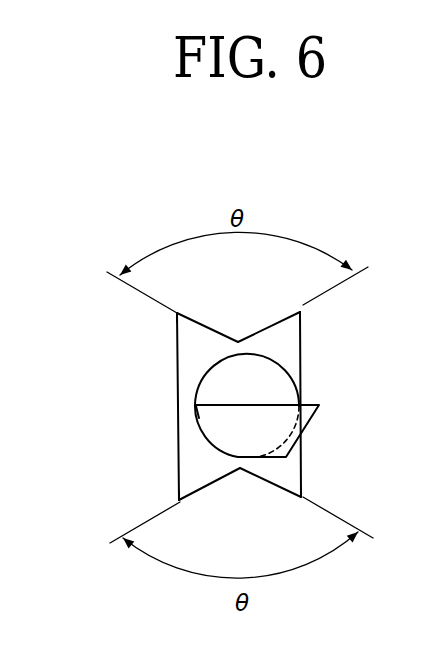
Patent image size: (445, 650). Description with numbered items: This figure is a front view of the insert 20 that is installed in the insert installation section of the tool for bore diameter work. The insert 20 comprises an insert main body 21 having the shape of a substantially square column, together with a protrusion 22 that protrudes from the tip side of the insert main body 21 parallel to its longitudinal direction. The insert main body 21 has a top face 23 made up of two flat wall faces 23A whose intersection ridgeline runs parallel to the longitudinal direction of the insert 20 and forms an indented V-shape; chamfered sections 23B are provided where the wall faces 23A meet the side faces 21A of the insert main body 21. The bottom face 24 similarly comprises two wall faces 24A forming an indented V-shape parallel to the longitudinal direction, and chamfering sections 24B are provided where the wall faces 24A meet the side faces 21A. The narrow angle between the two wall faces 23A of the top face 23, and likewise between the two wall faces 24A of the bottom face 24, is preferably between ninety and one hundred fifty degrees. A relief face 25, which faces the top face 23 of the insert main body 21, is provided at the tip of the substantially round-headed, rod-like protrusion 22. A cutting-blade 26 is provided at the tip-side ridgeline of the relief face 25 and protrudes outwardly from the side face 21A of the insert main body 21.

The insert 20 is at (326, 237).
The insert main body 21 is at (166, 432).
The side face 21A is at (176, 380).
The protrusion 22 is at (198, 459).
The top face 23 is at (221, 320).
The flat wall face 23A is at (198, 317).
The chamfered section 23B is at (176, 311).
The bottom face 24 is at (252, 489).
The wall face 24A is at (210, 488).
The chamfering section 24B is at (183, 505).
The relief face 25 is at (280, 405).
The cutting-blade 26 is at (319, 405).